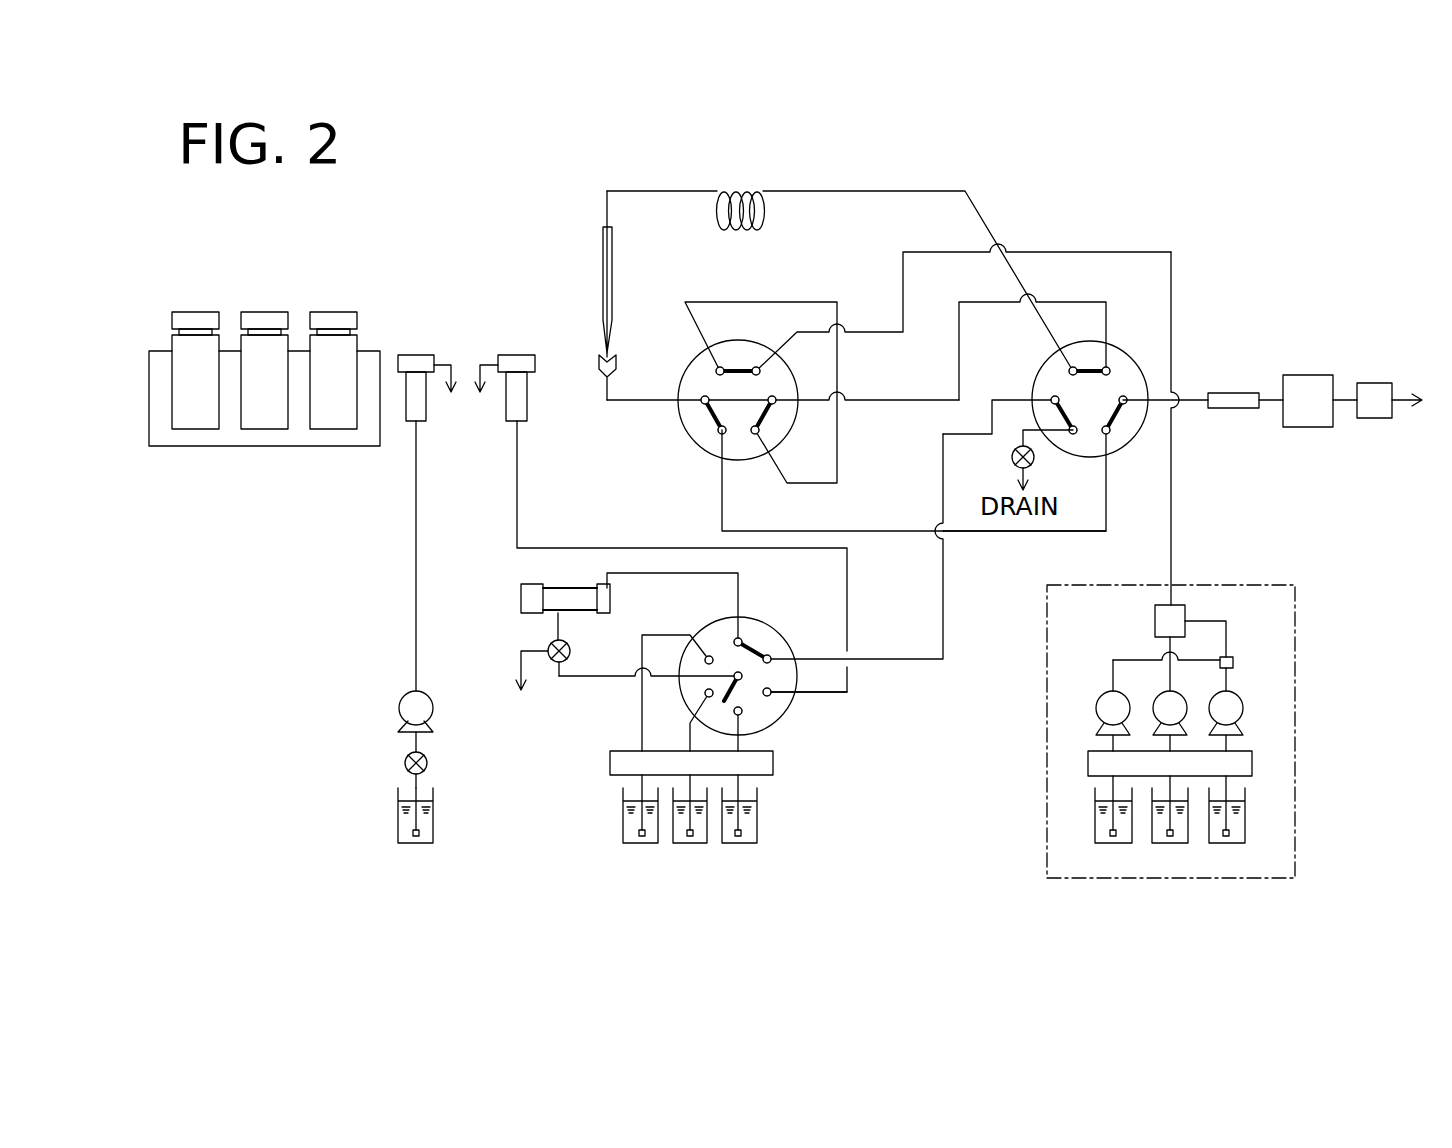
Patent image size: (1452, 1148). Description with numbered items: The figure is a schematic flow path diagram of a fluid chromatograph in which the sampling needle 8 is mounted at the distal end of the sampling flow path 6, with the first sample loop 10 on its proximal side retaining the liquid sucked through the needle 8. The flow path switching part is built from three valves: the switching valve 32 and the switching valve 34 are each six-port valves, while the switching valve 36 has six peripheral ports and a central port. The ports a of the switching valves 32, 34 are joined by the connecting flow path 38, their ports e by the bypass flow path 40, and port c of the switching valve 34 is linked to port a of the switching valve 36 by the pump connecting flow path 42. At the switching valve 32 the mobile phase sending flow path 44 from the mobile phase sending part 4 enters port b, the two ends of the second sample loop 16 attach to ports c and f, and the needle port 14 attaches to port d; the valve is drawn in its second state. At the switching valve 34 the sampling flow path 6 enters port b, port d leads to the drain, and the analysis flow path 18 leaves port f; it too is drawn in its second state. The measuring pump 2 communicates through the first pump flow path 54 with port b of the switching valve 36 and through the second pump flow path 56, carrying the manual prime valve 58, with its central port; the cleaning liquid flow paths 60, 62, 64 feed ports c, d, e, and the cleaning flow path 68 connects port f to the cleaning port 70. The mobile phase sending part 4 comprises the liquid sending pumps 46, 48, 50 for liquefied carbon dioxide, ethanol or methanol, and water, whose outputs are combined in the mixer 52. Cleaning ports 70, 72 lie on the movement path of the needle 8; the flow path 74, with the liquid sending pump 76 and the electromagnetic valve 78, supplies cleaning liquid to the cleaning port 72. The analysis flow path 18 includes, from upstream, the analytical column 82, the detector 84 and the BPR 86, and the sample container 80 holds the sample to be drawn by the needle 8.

The measuring pump 2 is at (610, 600).
The mobile phase sending part 4 is at (1253, 583).
The sampling flow path 6 is at (893, 190).
The sampling needle 8 is at (603, 250).
The first sample loop 10 is at (749, 190).
The needle port 14 is at (599, 375).
The second sample loop 16 is at (752, 301).
The analysis flow path 18 is at (1190, 398).
The switching valve 32 is at (690, 437).
The switching valve 34 is at (1032, 391).
The switching valve 36 is at (770, 625).
The connecting flow path 38 is at (903, 404).
The bypass flow path 40 is at (975, 536).
The pump connecting flow path 42 is at (949, 633).
The mobile phase sending flow path 44 is at (1082, 251).
The liquid sending pump 46 is at (1098, 700).
The liquid sending pump 48 is at (1157, 693).
The liquid sending pump 50 is at (1243, 700).
The mixer 52 is at (1153, 622).
The first pump flow path 54 is at (675, 574).
The second pump flow path 56 is at (590, 677).
The manual prime valve 58 is at (572, 648).
The cleaning liquid flow path 60 is at (640, 738).
The cleaning liquid flow path 62 is at (688, 741).
The cleaning liquid flow path 64 is at (742, 745).
The cleaning flow path 68 is at (823, 694).
The cleaning port 70 is at (532, 355).
The cleaning port 72 is at (422, 355).
The flow path 74 is at (420, 542).
The liquid sending pump 76 is at (432, 700).
The electromagnetic valve 78 is at (428, 762).
The sample container 80 is at (357, 312).
The analytical column 82 is at (1242, 393).
The detector 84 is at (1310, 375).
The BPR 86 is at (1373, 383).